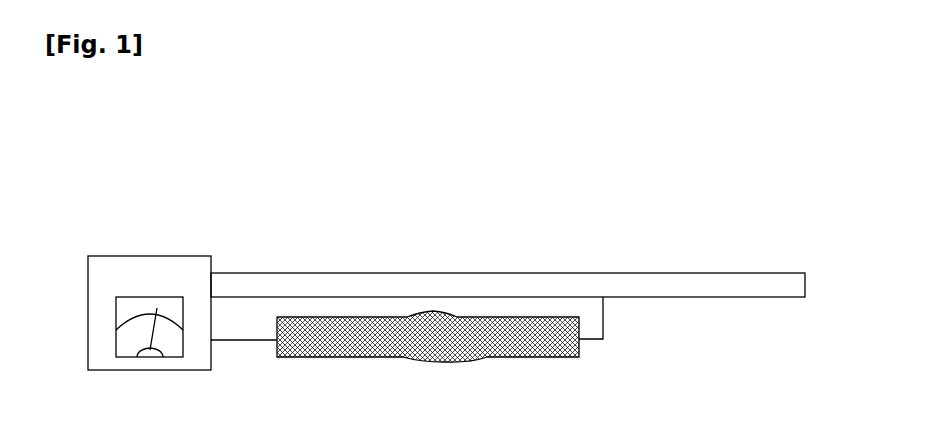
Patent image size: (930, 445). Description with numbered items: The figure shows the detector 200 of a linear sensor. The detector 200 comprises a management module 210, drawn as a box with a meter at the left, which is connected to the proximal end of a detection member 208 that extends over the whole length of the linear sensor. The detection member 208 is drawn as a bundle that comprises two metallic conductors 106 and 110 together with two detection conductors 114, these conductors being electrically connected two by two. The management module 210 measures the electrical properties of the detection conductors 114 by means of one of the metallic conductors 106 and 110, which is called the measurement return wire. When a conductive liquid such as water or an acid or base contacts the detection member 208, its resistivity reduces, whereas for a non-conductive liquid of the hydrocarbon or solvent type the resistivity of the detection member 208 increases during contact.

The detector 200 is at (197, 156).
The detection member 208 is at (597, 212).
The management module 210 is at (167, 273).
The metallic conductor 106 is at (331, 272).
The metallic conductor 110 is at (407, 297).
The detection conductors 114 is at (352, 357).